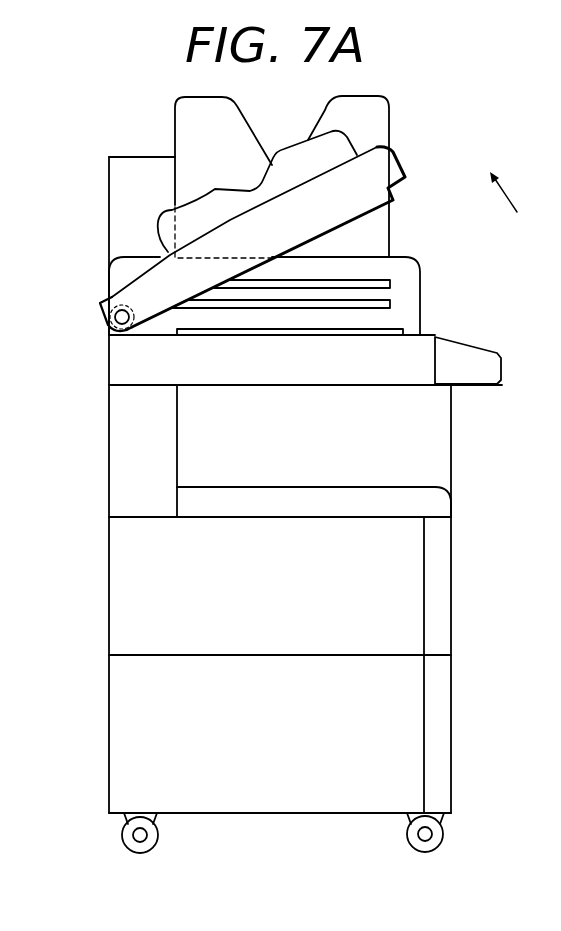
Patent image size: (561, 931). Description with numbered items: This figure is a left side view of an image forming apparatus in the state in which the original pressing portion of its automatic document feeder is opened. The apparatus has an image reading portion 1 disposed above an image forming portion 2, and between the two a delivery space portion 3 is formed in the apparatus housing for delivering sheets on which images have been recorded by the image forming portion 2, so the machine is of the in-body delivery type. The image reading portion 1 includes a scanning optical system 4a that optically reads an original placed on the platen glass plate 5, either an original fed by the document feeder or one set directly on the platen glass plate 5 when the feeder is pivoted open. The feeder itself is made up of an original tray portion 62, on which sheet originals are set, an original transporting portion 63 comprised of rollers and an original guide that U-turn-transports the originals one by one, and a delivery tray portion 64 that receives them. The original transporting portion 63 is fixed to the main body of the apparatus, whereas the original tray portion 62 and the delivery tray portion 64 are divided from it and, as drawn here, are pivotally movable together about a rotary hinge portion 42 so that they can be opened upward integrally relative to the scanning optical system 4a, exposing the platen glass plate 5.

The image reading portion 1 is at (118, 367).
The image forming portion 2 is at (438, 567).
The delivery space portion 3 is at (438, 462).
The scanning optical system 4a is at (427, 342).
The platen glass plate 5 is at (380, 332).
The rotary hinge portion 42 is at (110, 297).
The original tray portion 62 is at (310, 217).
The original transporting portion 63 is at (410, 287).
The delivery tray portion 64 is at (403, 162).